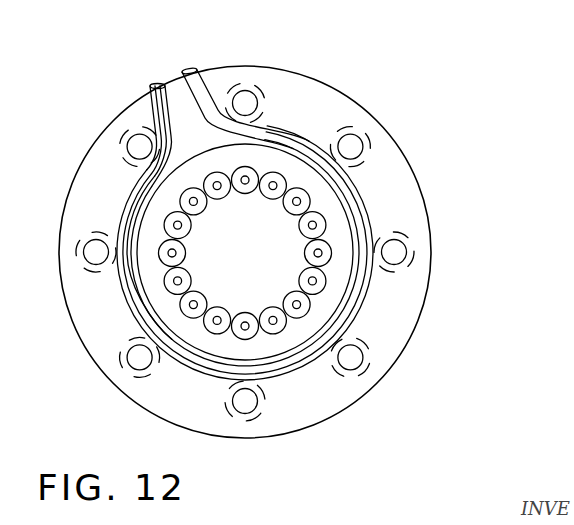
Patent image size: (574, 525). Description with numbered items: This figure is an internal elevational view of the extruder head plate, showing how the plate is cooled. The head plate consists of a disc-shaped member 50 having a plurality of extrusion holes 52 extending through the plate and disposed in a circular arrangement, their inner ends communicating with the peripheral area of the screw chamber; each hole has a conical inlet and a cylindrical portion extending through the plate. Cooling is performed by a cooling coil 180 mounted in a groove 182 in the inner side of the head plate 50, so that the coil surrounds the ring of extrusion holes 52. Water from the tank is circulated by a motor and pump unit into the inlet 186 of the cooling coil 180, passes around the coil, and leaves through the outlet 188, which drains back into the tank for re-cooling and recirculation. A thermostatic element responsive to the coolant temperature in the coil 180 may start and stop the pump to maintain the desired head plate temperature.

The disc-shaped member 50 is at (416, 203).
The extrusion holes 52 is at (296, 202).
The cooling coil 180 is at (130, 208).
The groove 182 is at (210, 377).
The inlet 186 is at (154, 86).
The outlet 188 is at (194, 69).